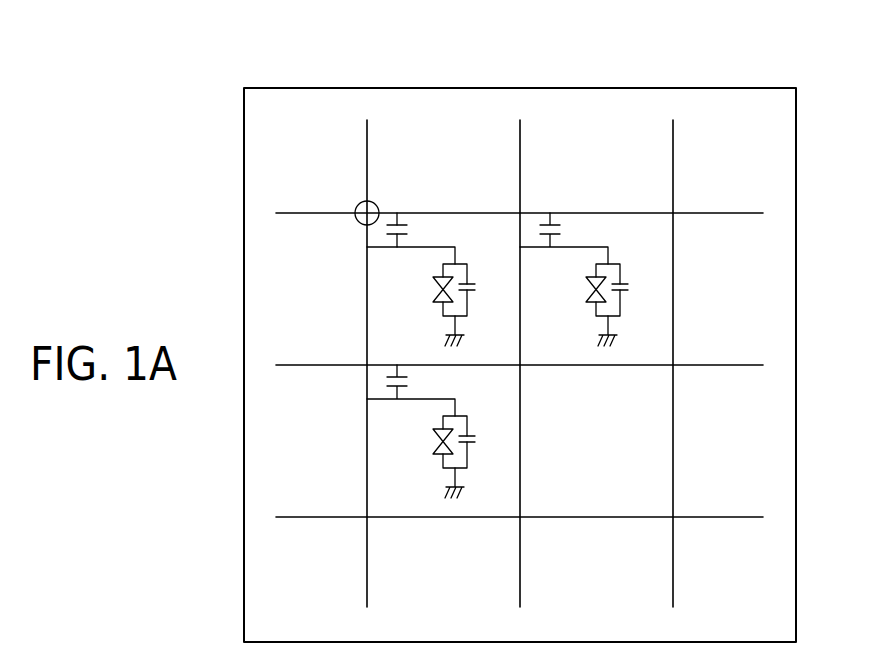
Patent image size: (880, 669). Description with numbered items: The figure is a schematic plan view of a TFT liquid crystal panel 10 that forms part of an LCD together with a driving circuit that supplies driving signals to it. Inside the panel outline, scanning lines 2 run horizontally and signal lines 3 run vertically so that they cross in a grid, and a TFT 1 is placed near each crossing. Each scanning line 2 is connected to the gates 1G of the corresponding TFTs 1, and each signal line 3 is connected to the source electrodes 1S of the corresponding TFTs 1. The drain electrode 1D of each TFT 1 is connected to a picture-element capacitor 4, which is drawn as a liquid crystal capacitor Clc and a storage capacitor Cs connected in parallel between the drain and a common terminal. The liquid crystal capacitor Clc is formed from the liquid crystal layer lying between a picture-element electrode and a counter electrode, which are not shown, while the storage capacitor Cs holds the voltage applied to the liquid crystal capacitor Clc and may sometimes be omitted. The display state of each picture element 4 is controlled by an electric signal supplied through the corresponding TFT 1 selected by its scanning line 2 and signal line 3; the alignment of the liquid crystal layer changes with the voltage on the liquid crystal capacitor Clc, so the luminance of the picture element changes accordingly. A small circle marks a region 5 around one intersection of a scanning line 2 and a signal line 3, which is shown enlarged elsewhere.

The TFT liquid crystal panel 10 is at (733, 68).
The TFT 1 is at (413, 223).
The gate 1G is at (388, 212).
The drain electrode 1D is at (416, 247).
The source electrode 1S is at (377, 248).
The scanning line 2 is at (719, 364).
The signal line 3 is at (367, 141).
The picture-element capacitor 4 is at (389, 313).
The region 5 is at (357, 205).
The liquid crystal capacitor Clc is at (427, 293).
The storage capacitor Cs is at (481, 321).